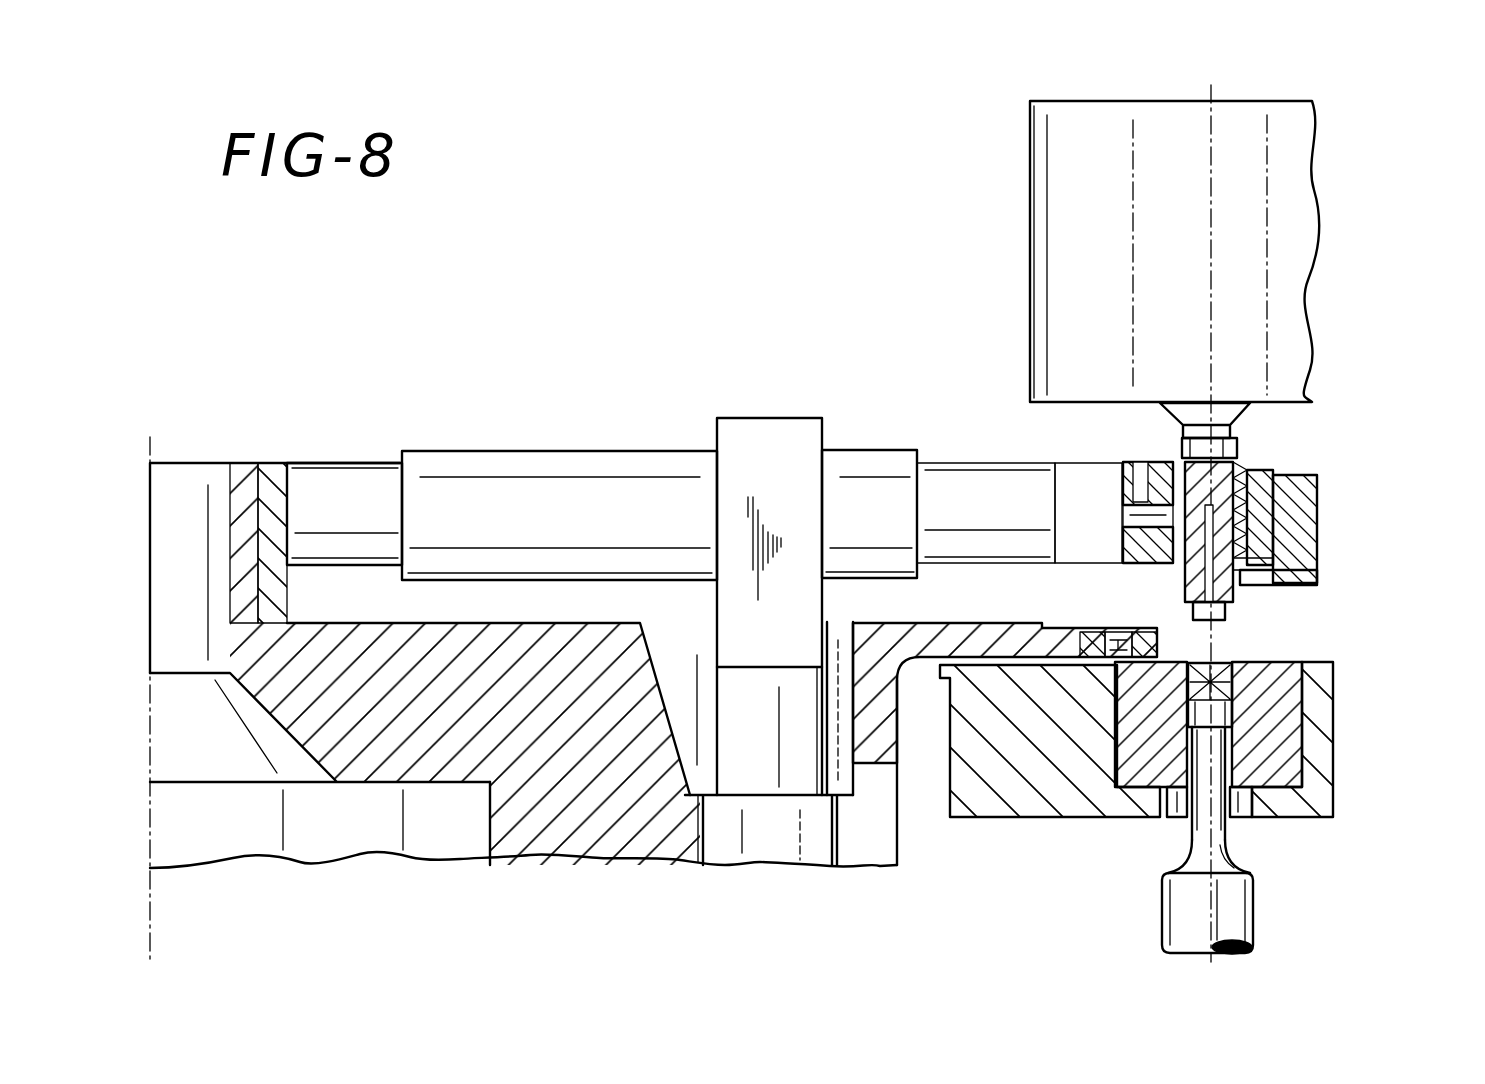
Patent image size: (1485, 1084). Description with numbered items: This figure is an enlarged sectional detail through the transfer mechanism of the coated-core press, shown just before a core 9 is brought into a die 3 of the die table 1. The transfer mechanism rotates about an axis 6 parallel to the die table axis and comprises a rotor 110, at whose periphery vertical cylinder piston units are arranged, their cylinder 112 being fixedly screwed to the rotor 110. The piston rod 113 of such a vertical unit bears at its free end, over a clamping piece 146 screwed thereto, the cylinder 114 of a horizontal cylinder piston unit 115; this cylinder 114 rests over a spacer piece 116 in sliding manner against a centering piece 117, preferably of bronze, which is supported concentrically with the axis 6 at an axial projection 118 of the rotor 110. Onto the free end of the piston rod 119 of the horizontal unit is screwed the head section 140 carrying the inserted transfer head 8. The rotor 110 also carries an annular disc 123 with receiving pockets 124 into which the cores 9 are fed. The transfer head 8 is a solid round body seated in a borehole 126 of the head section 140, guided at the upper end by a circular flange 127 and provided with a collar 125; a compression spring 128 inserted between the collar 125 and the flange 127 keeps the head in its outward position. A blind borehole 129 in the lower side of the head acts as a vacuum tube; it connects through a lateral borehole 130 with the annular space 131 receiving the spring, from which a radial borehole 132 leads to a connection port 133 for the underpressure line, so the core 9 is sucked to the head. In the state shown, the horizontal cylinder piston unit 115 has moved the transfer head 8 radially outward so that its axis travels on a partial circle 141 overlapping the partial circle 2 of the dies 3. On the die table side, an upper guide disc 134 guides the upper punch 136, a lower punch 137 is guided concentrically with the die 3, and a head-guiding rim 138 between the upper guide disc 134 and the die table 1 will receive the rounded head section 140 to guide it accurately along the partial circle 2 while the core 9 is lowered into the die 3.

The die table 1 is at (1003, 826).
The partial circle 2 is at (1210, 837).
The die 3 is at (1300, 735).
The axis 6 is at (150, 450).
The transfer head 8 is at (1240, 462).
The core 9 is at (1200, 620).
The rotor 110 is at (553, 840).
The cylinder 112 is at (787, 843).
The piston rod 113 is at (747, 773).
The cylinder 114 is at (607, 492).
The horizontal cylinder piston unit 115 is at (523, 438).
The spacer piece 116 is at (342, 482).
The centering piece 117 is at (270, 468).
The axial projection 118 is at (238, 468).
The piston rod 119 is at (950, 483).
The annular disc 123 is at (915, 632).
The receiving pocket 124 is at (1093, 640).
The collar 125 is at (1255, 545).
The borehole 126 is at (1265, 468).
The circular flange 127 is at (1285, 497).
The compression spring 128 is at (1240, 520).
The blind borehole 129 is at (1228, 595).
The lateral borehole 130 is at (1160, 555).
The annular space 131 is at (1160, 468).
The radial borehole 132 is at (1122, 510).
The connection port 133 is at (1122, 490).
The upper guide disc 134 is at (1300, 197).
The upper punch 136 is at (1232, 400).
The lower punch 137 is at (1240, 922).
The head-guiding rim 138 is at (1290, 585).
The head section 140 is at (1093, 480).
The partial circle 141 is at (1250, 690).
The clamping piece 146 is at (762, 440).